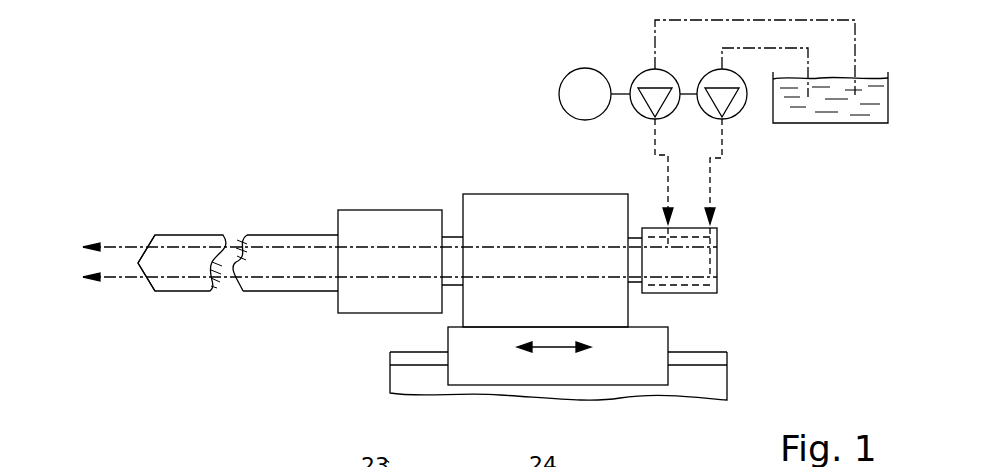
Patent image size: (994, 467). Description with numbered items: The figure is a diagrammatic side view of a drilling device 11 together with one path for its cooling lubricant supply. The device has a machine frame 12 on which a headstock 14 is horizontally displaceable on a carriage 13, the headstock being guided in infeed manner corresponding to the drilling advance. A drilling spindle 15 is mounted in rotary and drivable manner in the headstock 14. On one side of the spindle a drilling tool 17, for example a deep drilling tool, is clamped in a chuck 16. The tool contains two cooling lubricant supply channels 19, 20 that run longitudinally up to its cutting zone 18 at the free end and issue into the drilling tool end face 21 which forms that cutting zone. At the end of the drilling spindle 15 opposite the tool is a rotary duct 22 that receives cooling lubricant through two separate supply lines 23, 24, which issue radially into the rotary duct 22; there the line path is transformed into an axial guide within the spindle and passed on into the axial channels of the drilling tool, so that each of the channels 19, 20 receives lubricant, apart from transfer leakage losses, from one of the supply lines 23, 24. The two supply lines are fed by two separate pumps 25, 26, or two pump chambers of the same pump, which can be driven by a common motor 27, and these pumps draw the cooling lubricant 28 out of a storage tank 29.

The drilling device 11 is at (462, 138).
The machine frame 12 is at (720, 382).
The carriage 13 is at (720, 362).
The headstock 14 is at (556, 225).
The drilling spindle 15 is at (452, 250).
The chuck 16 is at (388, 225).
The drilling tool 17 is at (289, 258).
The cutting zone 18 is at (143, 233).
The cooling lubricant supply channel 19 is at (183, 245).
The cooling lubricant supply channel 20 is at (180, 280).
The drilling tool end face 21 is at (135, 265).
The rotary duct 22 is at (693, 260).
The supply line 23 is at (668, 175).
The supply line 24 is at (710, 183).
The pump 25 is at (647, 72).
The pump 26 is at (737, 108).
The motor 27 is at (590, 68).
The cooling lubricant 28 is at (842, 97).
The storage tank 29 is at (878, 125).